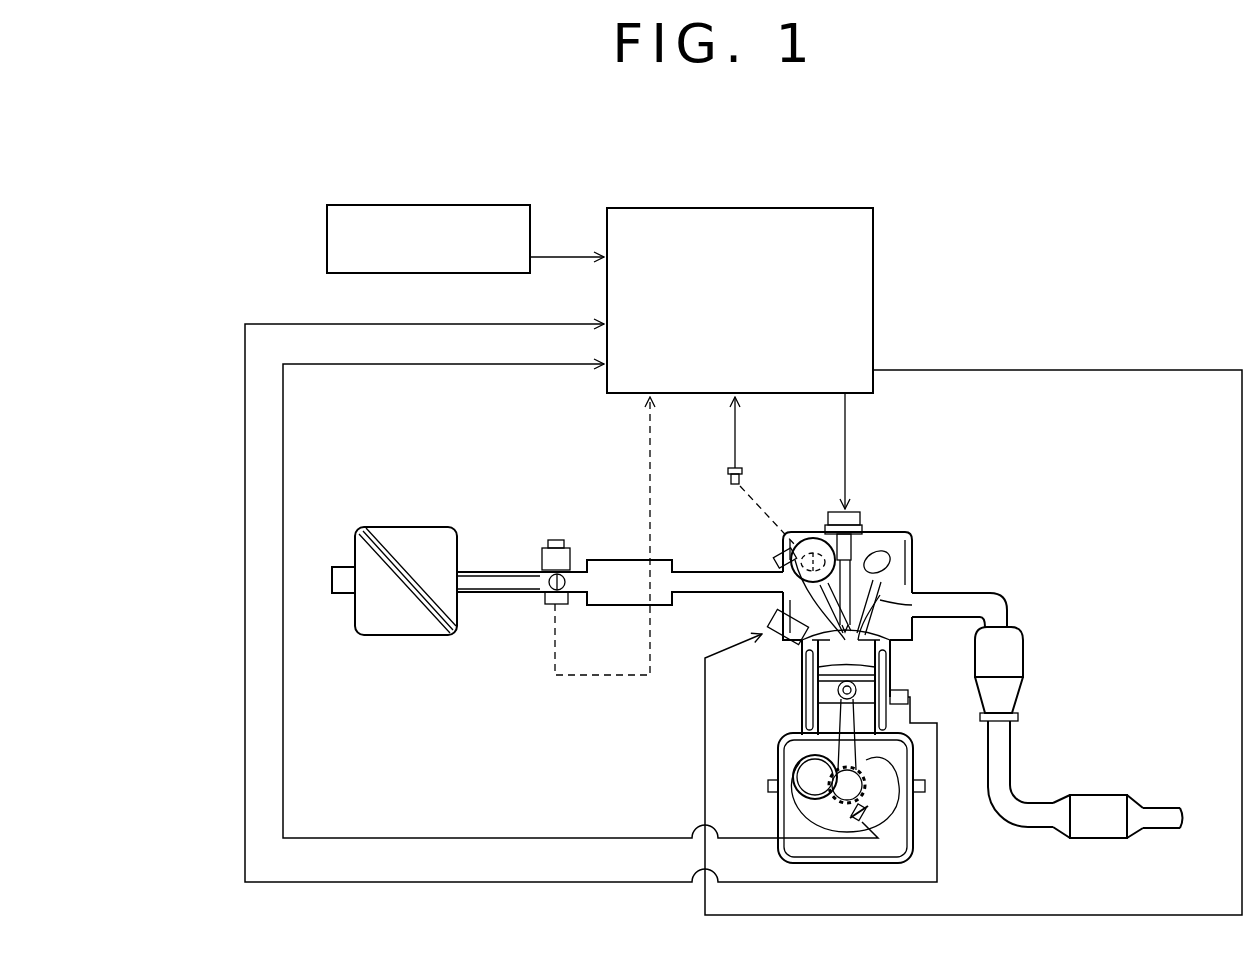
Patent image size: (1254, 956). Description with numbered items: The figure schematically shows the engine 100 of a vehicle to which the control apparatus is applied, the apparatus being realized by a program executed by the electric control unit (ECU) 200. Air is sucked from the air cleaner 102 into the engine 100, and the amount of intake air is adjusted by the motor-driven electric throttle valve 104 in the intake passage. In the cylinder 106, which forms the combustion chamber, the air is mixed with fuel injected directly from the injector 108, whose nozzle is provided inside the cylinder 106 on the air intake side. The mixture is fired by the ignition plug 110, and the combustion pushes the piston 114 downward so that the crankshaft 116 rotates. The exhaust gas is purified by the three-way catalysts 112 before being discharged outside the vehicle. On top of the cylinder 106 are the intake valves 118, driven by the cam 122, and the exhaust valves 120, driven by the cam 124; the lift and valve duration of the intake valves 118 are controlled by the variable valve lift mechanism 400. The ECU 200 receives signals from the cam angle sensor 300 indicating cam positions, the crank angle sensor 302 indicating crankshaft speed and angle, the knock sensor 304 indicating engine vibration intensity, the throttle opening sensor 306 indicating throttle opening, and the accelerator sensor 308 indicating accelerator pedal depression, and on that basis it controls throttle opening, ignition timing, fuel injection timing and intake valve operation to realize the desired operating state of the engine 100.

The engine 100 is at (978, 535).
The air cleaner 102 is at (400, 527).
The throttle valve 104 is at (572, 578).
The cylinder 106 is at (825, 660).
The injector 108 is at (752, 612).
The ignition plug 110 is at (860, 525).
The three-way catalysts 112 is at (1023, 650).
The piston 114 is at (820, 712).
The crankshaft 116 is at (880, 818).
The intake valves 118 is at (777, 565).
The exhaust valves 120 is at (912, 585).
The cam 122 is at (805, 532).
The cam 124 is at (915, 532).
The electric control unit (ECU) 200 is at (738, 208).
The cam angle sensor 300 is at (740, 462).
The crank angle sensor 302 is at (874, 804).
The knock sensor 304 is at (900, 692).
The throttle opening sensor 306 is at (548, 604).
The accelerator sensor 308 is at (327, 232).
The variable valve lift (VVL) mechanism 400 is at (812, 540).